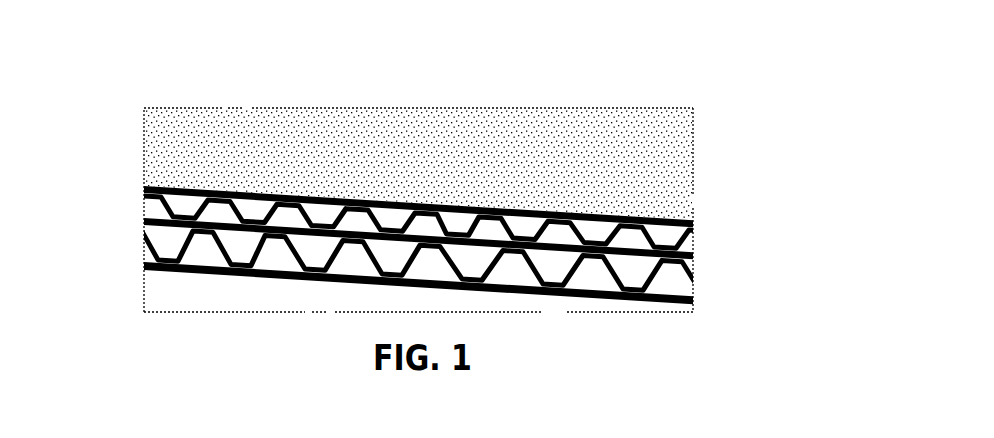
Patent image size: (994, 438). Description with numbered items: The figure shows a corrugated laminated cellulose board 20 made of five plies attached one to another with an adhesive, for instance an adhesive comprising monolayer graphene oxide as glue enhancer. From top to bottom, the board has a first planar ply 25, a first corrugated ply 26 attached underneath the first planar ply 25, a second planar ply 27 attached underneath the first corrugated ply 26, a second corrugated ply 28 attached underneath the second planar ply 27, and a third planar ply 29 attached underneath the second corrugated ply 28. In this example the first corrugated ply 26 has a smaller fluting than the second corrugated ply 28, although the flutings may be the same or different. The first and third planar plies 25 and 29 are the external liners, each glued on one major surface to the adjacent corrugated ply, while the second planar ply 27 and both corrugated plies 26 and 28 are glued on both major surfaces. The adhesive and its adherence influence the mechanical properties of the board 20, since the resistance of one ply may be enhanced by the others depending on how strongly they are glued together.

The corrugated laminated cellulose board 20 is at (755, 117).
The first planar ply 25 is at (175, 188).
The first corrugated ply 26 is at (732, 247).
The second planar ply 27 is at (148, 222).
The second corrugated ply 28 is at (732, 286).
The third planar ply 29 is at (150, 264).